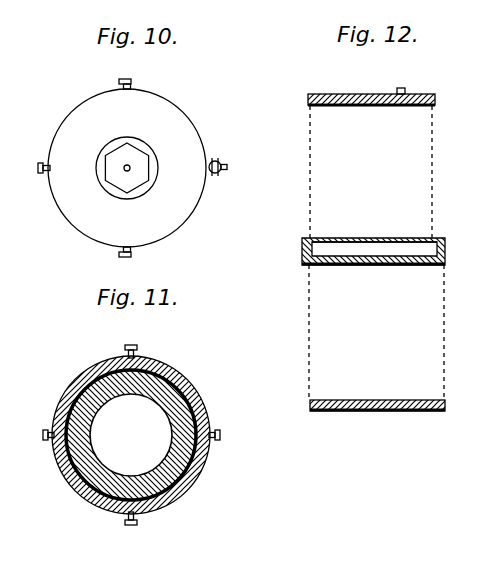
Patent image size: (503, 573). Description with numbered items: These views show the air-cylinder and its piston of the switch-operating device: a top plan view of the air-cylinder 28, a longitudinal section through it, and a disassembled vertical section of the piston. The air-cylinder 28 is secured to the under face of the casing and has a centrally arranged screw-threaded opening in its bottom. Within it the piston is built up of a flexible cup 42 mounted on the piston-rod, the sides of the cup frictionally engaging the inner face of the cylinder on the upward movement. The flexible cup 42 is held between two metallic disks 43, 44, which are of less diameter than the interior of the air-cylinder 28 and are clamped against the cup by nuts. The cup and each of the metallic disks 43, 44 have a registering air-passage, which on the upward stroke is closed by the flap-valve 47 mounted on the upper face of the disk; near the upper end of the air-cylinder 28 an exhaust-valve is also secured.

In FIG. 10, the air-cylinder 28 is at (122, 168).
In FIG. 11, the air-cylinder 28 is at (73, 398).
In FIG. 12, the flexible cup 42 is at (301, 257).
In FIG. 12, the metallic disk 43 is at (307, 100).
In FIG. 12, the metallic disk 44 is at (309, 406).
In FIG. 10, the flap-valve 47 is at (262, 157).
In FIG. 12, the flap-valve 47 is at (415, 80).